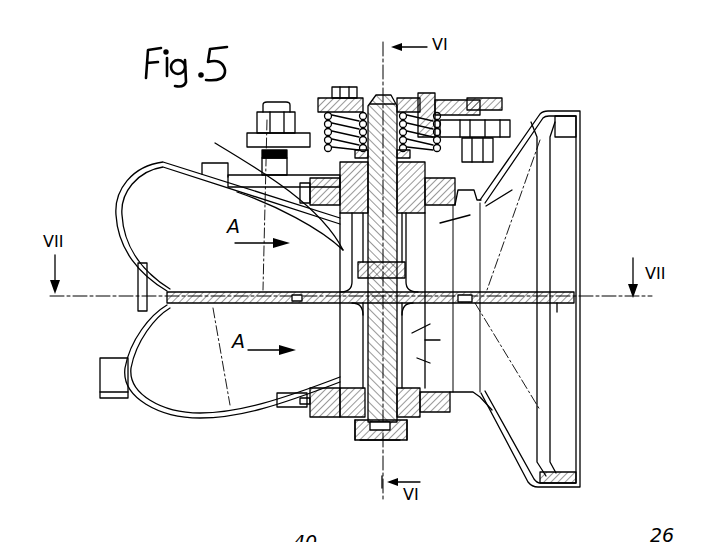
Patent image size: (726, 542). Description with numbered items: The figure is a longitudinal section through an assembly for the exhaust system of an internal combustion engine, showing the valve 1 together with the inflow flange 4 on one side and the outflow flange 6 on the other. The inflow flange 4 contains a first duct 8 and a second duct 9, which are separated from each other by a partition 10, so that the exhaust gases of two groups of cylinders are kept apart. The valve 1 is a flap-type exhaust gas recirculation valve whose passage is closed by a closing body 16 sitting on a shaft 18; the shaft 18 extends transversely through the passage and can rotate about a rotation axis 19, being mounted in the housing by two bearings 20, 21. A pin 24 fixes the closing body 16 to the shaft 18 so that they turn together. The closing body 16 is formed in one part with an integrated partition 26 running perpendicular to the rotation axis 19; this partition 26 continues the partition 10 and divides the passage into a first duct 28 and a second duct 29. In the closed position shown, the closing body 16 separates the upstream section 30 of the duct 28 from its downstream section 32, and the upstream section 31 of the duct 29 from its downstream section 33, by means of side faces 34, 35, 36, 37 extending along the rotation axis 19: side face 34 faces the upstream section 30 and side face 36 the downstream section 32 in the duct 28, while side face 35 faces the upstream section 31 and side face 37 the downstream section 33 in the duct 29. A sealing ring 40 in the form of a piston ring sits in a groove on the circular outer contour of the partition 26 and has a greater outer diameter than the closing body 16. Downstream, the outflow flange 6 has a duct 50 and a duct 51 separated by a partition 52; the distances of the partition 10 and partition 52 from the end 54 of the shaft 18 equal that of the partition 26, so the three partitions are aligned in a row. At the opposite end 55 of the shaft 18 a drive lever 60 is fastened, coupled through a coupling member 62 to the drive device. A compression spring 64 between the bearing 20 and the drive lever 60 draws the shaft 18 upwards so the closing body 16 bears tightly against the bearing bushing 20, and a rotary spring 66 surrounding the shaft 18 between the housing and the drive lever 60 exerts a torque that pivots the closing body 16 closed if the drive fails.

The valve 1 is at (422, 452).
The inflow flange 4 is at (163, 152).
The outflow flange 6 is at (563, 108).
The first duct 8 is at (147, 345).
The second duct 9 is at (134, 194).
The partition 10 is at (200, 300).
The closing body 16 is at (417, 358).
The shaft 18 is at (373, 362).
The rotation axis 19 is at (380, 442).
The bearing 20 is at (356, 232).
The bearing 21 is at (410, 418).
The pin 24 is at (417, 248).
The partition 26 is at (318, 296).
The first duct 28 is at (419, 415).
The second duct 29 is at (436, 186).
The upstream section 30 is at (338, 348).
The upstream section 31 is at (263, 186).
The downstream section 32 is at (428, 340).
The downstream section 33 is at (410, 230).
The side face 34 is at (340, 320).
The side face 35 is at (265, 150).
The side face 36 is at (412, 333).
The side face 37 is at (486, 208).
The sealing ring 40 is at (443, 293).
The duct 50 is at (568, 440).
The duct 51 is at (573, 127).
The partition 52 is at (557, 305).
The end of the shaft 54 is at (363, 422).
The end of the shaft 55 is at (388, 98).
The drive lever 60 is at (498, 102).
The coupling member 62 is at (502, 130).
The compression spring 64 is at (363, 137).
The rotary spring 66 is at (438, 120).